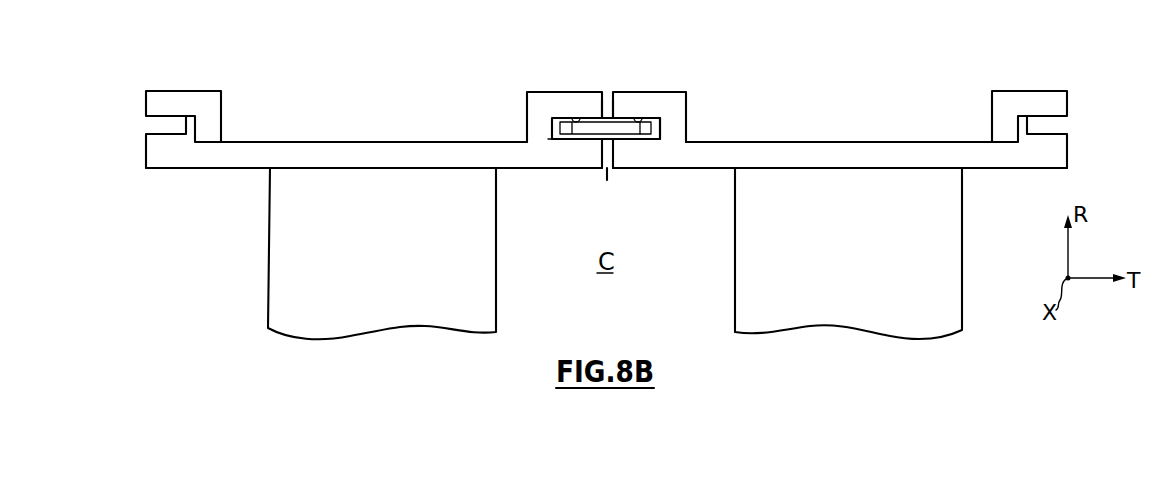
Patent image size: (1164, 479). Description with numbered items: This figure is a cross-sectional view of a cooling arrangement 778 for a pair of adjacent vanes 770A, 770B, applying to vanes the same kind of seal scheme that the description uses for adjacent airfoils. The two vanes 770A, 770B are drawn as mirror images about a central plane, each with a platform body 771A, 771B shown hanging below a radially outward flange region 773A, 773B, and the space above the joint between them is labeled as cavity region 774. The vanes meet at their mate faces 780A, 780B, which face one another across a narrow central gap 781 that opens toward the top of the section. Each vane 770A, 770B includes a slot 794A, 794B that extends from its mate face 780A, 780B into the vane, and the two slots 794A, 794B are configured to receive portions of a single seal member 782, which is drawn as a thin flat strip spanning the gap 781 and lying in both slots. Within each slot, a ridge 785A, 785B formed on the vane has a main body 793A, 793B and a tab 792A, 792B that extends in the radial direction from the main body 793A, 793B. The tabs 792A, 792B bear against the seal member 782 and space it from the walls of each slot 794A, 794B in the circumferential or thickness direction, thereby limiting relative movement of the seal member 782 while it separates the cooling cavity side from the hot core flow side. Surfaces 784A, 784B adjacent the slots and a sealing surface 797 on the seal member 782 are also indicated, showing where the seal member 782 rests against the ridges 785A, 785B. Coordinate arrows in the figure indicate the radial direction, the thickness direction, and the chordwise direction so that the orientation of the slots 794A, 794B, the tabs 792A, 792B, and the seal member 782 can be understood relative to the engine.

The vane 770A is at (274, 86).
The vane 770B is at (945, 50).
The first wall 771A is at (270, 283).
The second wall 771B is at (962, 308).
The first base plate 773A is at (168, 168).
The second base plate 773B is at (1007, 168).
The joint region 774 is at (531, 73).
The cooling arrangement 778 is at (665, 50).
The mate face 780A is at (600, 151).
The mate face 780B is at (660, 136).
The gap 781 is at (608, 80).
The seal member 782 is at (617, 117).
The first flange 784A is at (554, 139).
The second flange 784B is at (627, 140).
The ridge 785A is at (565, 140).
The ridge 785B is at (638, 140).
The tab 792A is at (553, 127).
The tab 792B is at (660, 127).
The main body 793A is at (582, 140).
The main body 793B is at (647, 140).
The slot 794A is at (578, 118).
The slot 794B is at (640, 118).
The seal 797 is at (587, 119).